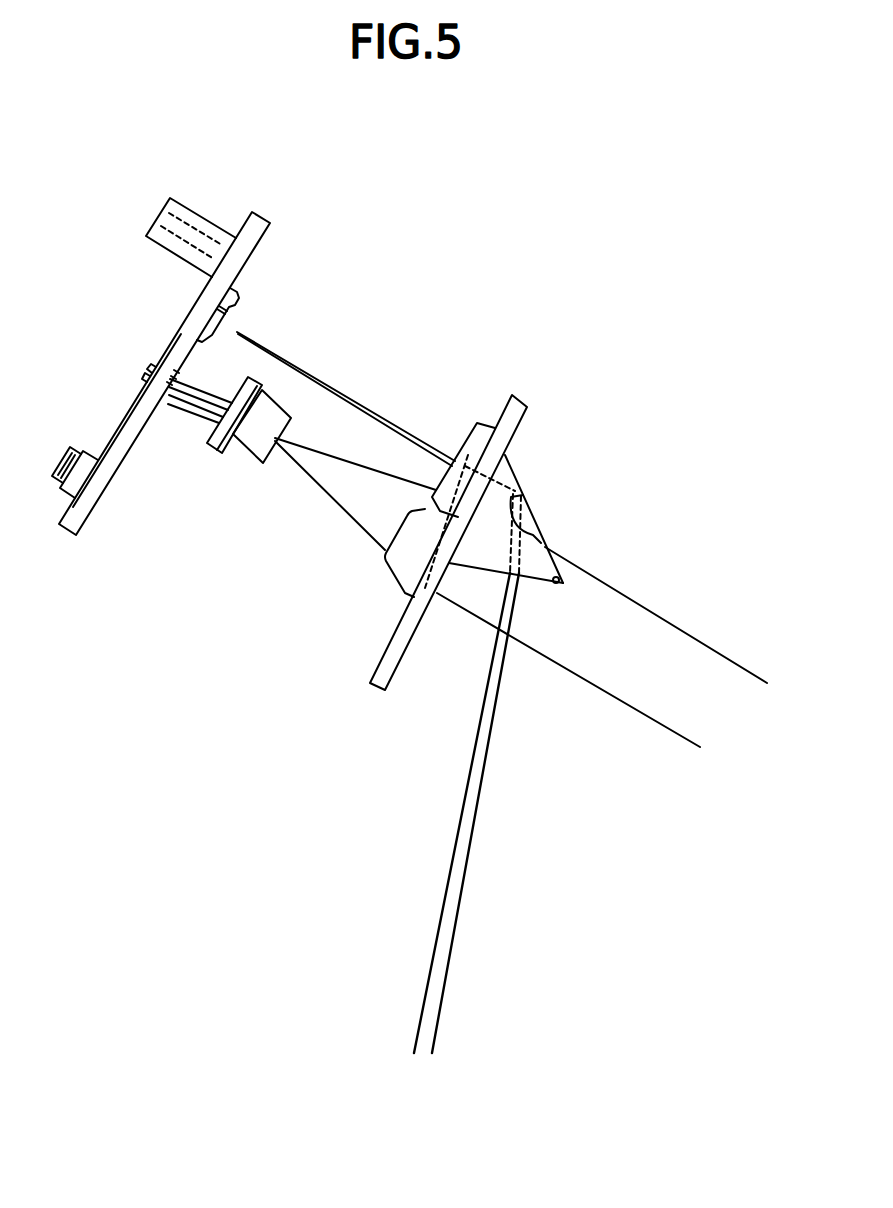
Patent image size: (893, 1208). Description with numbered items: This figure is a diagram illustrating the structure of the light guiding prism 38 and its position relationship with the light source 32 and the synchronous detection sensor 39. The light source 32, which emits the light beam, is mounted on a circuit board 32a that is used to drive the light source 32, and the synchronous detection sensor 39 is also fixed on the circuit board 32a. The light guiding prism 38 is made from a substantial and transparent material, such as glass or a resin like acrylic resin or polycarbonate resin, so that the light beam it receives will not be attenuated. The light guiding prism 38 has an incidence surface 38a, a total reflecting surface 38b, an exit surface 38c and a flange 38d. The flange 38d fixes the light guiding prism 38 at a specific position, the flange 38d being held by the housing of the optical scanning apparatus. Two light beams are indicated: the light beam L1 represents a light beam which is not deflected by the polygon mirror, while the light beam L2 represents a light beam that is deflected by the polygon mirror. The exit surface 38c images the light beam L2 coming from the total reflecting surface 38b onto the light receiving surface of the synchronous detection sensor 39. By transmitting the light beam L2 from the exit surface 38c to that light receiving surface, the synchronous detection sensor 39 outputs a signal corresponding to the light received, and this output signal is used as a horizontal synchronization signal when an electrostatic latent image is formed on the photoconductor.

The light source 32 is at (252, 450).
The circuit board 32a is at (122, 418).
The synchronous detection sensor 39 is at (237, 296).
The light guiding prism 38 is at (468, 520).
The incidence surface 38a is at (473, 572).
The total reflecting surface 38b is at (530, 503).
The exit surface 38c is at (460, 453).
The flange 38d is at (382, 651).
The light beam L1 is at (695, 640).
The light beam L2 is at (470, 843).